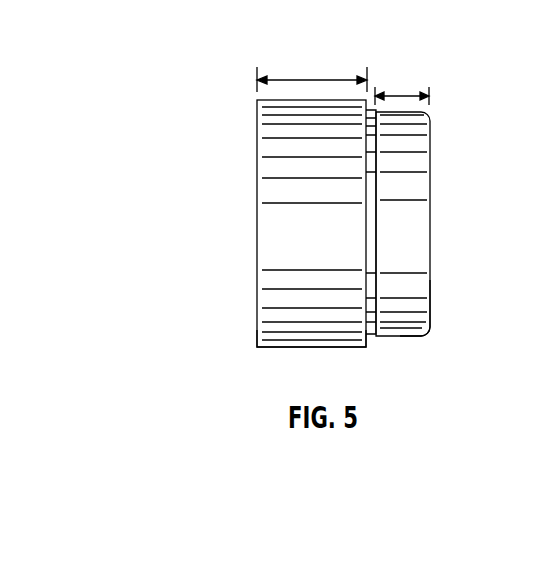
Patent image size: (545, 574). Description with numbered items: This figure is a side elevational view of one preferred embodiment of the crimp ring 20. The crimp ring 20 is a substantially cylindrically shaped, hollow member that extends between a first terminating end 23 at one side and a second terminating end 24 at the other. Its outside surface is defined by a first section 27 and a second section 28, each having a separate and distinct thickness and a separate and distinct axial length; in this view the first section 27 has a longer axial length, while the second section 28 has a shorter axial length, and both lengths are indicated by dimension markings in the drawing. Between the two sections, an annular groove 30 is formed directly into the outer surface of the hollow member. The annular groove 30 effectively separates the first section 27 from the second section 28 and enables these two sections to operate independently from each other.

The crimp ring 20 is at (225, 70).
The first section 27 is at (272, 220).
The first terminating end 23 is at (257, 342).
The annular groove 30 is at (370, 335).
The second section 28 is at (410, 220).
The second terminating end 24 is at (430, 312).